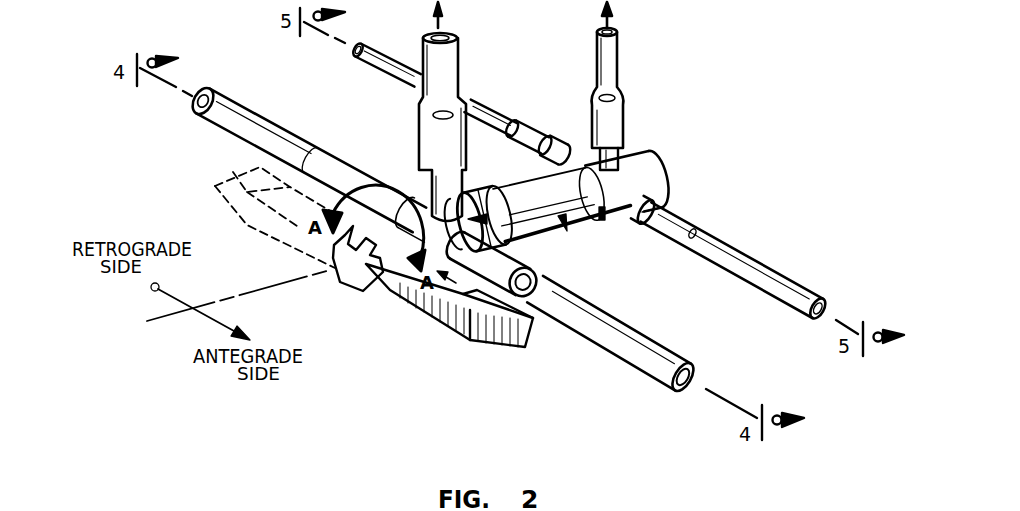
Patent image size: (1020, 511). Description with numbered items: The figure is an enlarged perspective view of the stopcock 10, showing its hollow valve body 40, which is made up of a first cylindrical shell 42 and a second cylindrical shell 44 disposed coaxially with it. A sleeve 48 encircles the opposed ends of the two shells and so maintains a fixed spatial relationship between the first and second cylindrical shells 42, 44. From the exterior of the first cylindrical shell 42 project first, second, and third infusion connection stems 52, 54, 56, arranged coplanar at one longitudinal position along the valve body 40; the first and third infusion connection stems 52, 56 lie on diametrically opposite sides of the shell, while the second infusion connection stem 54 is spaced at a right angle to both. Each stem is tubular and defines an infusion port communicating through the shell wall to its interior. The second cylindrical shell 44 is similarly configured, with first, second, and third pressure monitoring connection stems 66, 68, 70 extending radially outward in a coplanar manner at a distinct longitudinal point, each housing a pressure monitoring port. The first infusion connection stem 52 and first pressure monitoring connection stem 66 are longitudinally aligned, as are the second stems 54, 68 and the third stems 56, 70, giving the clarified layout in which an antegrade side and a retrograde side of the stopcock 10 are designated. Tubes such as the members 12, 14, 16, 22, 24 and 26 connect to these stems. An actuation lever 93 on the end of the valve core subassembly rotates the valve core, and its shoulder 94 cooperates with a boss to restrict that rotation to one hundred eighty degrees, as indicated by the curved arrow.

The stopcock 10 is at (700, 137).
The first tubular member 12 is at (230, 107).
The first vertical port tube 14 is at (442, 66).
The second tubular member 16 is at (643, 355).
The third tubular member 22 is at (388, 65).
The second vertical port tube 24 is at (608, 52).
The fourth tubular member 26 is at (783, 313).
The valve body 40 is at (600, 300).
The first cylindrical shell 42 is at (550, 238).
The second cylindrical shell 44 is at (615, 235).
The sleeve 48 is at (585, 235).
The first infusion connection stem 52 is at (395, 192).
The second infusion connection stem 54 is at (415, 190).
The third infusion connection stem 56 is at (403, 190).
The first pressure monitoring connection stem 66 is at (571, 148).
The second pressure monitoring connection stem 68 is at (616, 150).
The third pressure monitoring connection stem 70 is at (640, 178).
The actuation lever 93 is at (234, 217).
The shoulder 94 is at (373, 288).